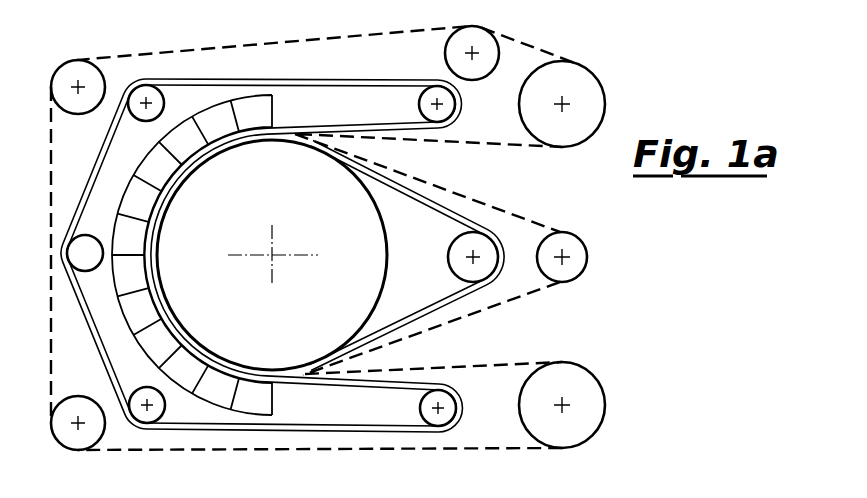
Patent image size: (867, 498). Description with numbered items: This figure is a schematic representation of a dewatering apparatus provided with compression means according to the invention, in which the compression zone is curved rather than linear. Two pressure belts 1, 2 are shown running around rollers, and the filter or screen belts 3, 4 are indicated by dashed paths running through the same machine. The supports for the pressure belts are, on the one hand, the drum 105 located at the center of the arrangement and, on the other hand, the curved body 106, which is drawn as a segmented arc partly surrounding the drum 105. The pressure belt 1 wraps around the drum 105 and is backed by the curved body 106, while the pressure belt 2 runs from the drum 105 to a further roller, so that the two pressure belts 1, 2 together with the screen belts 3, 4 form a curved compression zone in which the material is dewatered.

The pressure belt 1 is at (399, 80).
The pressure belt 2 is at (428, 202).
The filter or screen belt 3 is at (503, 146).
The filter or screen belt 4 is at (489, 311).
The drum 105 is at (247, 337).
The curved body 106 is at (217, 390).